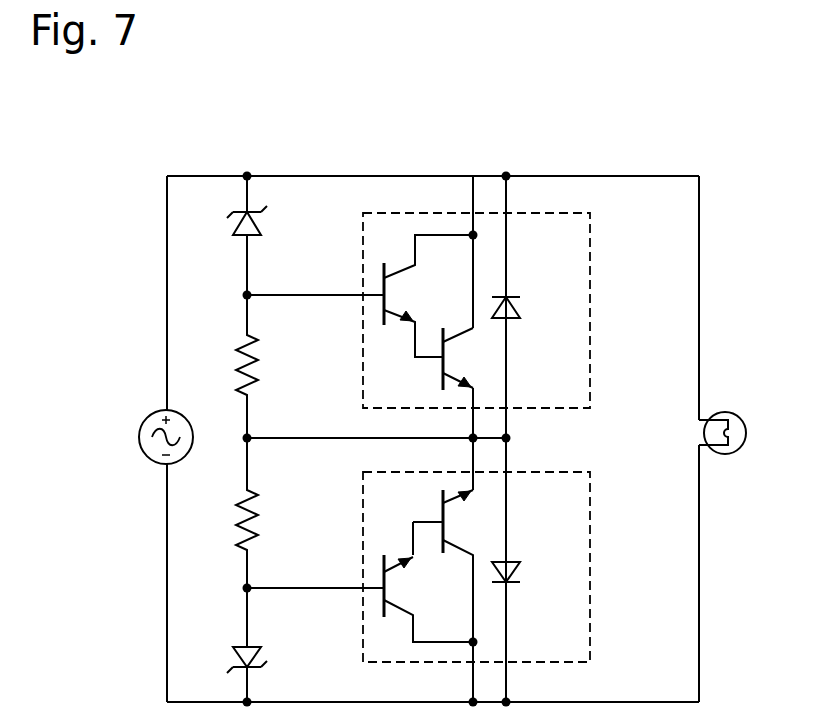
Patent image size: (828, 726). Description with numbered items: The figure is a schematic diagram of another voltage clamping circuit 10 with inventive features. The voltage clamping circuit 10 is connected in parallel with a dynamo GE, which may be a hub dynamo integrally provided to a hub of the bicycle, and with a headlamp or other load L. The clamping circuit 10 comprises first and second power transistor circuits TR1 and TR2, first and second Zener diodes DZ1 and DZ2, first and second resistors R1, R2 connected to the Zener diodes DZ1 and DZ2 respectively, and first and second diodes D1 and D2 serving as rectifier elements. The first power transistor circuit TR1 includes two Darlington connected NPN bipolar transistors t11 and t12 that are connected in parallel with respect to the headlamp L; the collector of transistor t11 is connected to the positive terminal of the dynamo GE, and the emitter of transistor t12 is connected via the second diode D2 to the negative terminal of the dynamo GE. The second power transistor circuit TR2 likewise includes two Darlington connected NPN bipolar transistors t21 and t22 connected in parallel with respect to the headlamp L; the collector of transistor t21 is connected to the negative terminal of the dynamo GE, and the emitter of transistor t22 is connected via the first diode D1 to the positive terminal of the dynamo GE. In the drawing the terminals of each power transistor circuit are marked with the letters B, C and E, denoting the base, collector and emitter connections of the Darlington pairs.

The voltage clamping circuit 10 is at (554, 149).
The first Zener diode DZ1 is at (275, 235).
The second Zener diode DZ2 is at (275, 645).
The first resistor R1 is at (272, 366).
The second resistor R2 is at (272, 513).
The dynamo GE is at (151, 454).
The headlamp or other load L is at (730, 448).
The first power transistor circuit TR1 is at (476, 310).
The second power transistor circuit TR2 is at (476, 567).
The transistor t11 is at (422, 293).
The transistor t12 is at (451, 342).
The transistor t21 is at (420, 605).
The transistor t22 is at (443, 566).
The first diode D1 is at (531, 309).
The second diode D2 is at (531, 574).
The base terminal B is at (315, 441).
The collector terminal C is at (475, 439).
The emitter terminal E is at (376, 439).